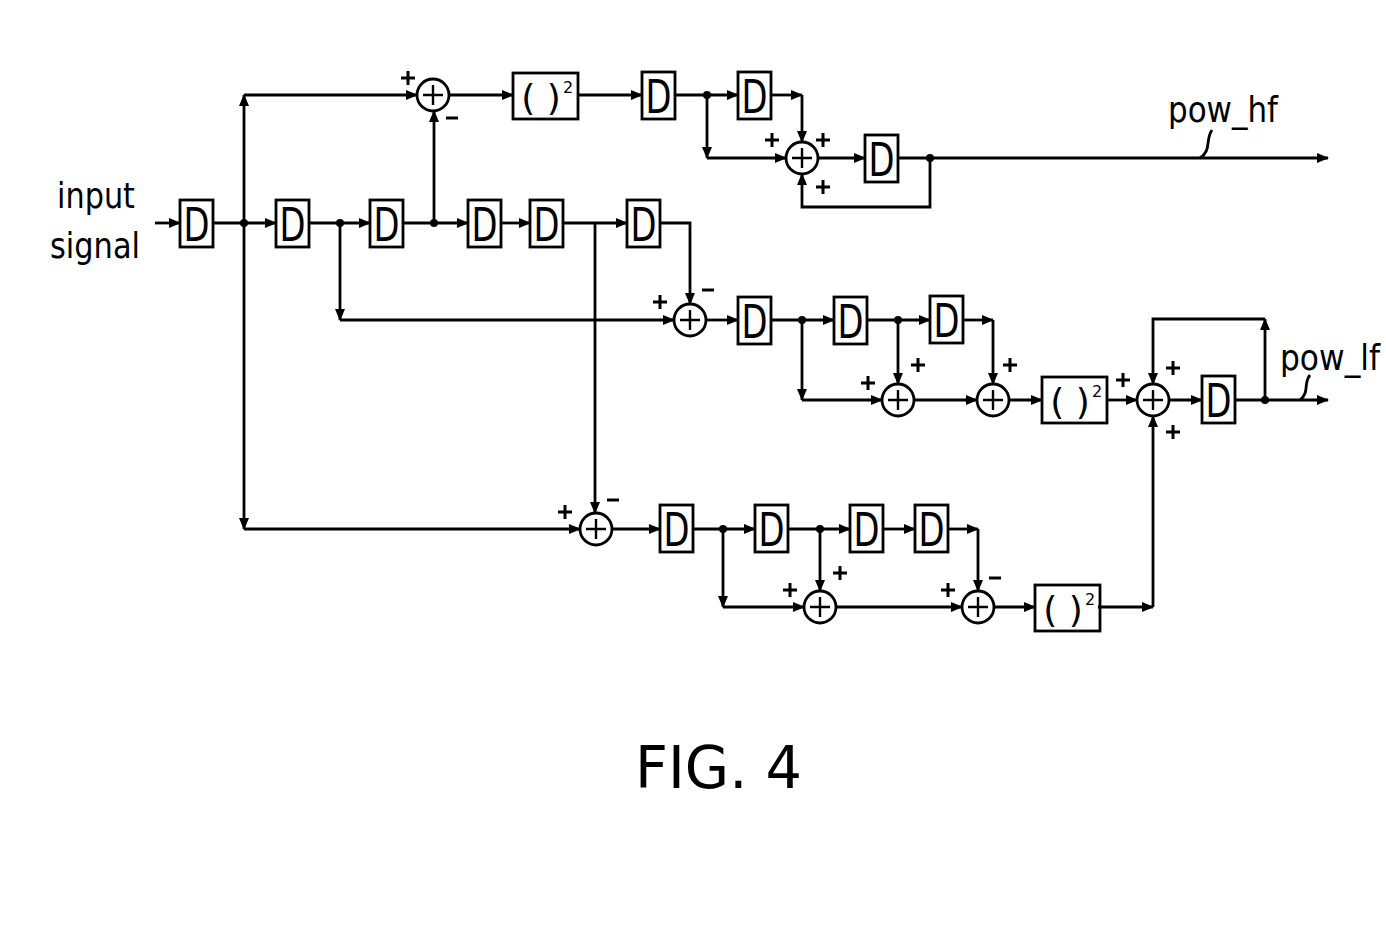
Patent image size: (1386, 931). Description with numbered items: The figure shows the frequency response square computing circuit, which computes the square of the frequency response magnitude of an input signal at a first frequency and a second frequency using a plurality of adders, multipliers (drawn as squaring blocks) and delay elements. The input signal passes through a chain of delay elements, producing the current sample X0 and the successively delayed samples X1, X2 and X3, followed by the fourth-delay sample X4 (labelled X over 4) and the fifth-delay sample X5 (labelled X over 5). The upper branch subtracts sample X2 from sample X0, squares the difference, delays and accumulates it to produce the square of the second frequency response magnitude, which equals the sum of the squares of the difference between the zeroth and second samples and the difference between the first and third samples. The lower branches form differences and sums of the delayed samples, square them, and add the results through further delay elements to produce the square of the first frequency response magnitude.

The input signal sample x(0) X0 is at (228, 202).
The delayed input sample x(1) X1 is at (323, 204).
The delayed input sample x(2) X2 is at (419, 202).
The delayed input sample x(3) X3 is at (502, 204).
The delayed input sample x(4) X4 is at (578, 191).
The delayed input sample x(5) X5 is at (661, 217).
The delayed input sample x 4 is at (578, 191).
The delayed input sample x 5 is at (661, 217).